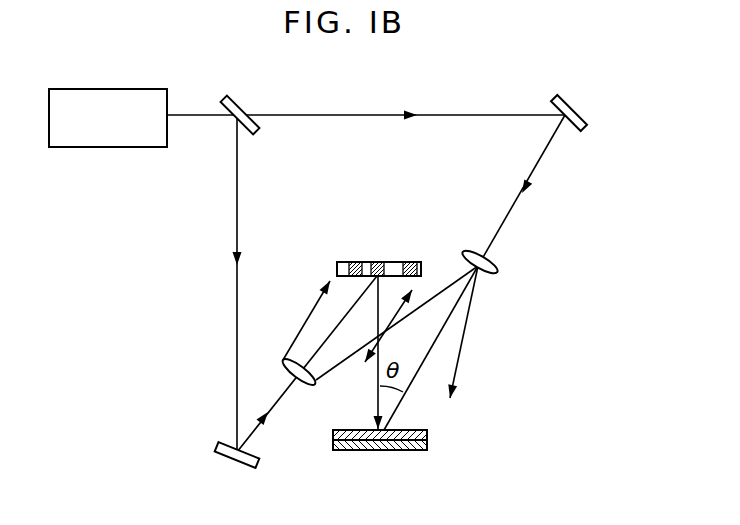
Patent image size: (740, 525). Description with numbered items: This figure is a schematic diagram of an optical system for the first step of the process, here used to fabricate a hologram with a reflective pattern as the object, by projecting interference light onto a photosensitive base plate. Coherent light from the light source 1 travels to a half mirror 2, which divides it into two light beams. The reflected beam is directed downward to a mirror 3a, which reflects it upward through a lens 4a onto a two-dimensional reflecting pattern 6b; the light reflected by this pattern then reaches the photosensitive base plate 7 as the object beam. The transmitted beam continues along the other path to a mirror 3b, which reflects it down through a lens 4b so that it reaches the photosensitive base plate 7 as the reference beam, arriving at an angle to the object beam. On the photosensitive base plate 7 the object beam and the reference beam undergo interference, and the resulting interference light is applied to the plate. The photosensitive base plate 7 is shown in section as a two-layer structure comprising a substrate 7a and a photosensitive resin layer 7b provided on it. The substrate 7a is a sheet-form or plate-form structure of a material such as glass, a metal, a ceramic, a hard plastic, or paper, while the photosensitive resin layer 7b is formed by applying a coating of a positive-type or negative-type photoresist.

The light source 1 is at (107, 88).
The half mirror 2 is at (247, 107).
The mirror 3a is at (216, 448).
The mirror 3b is at (577, 106).
The lens 4a is at (301, 386).
The lens 4b is at (497, 270).
The two-dimensional reflecting pattern 6b is at (376, 262).
The photosensitive base plate 7 is at (430, 445).
The substrate 7a is at (427, 446).
The photosensitive resin layer 7b is at (427, 433).